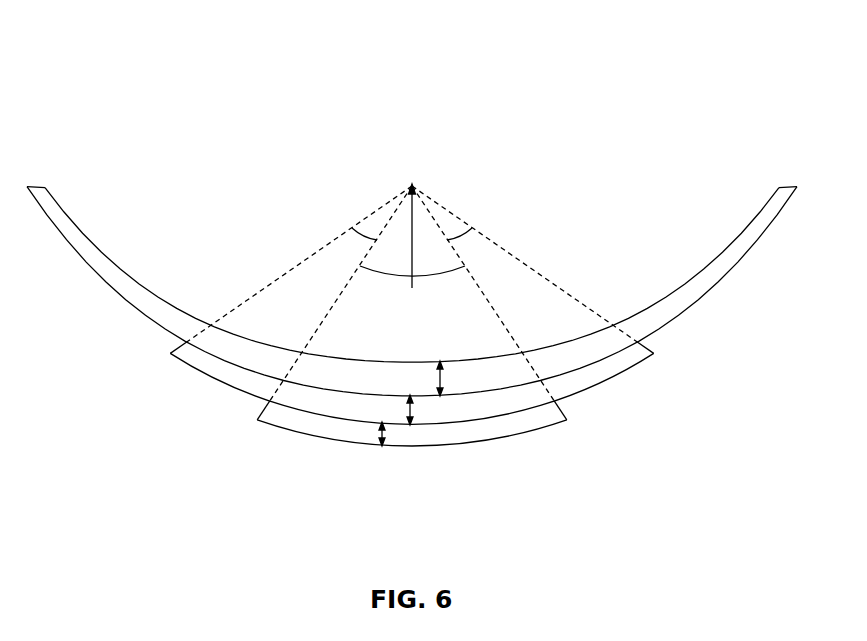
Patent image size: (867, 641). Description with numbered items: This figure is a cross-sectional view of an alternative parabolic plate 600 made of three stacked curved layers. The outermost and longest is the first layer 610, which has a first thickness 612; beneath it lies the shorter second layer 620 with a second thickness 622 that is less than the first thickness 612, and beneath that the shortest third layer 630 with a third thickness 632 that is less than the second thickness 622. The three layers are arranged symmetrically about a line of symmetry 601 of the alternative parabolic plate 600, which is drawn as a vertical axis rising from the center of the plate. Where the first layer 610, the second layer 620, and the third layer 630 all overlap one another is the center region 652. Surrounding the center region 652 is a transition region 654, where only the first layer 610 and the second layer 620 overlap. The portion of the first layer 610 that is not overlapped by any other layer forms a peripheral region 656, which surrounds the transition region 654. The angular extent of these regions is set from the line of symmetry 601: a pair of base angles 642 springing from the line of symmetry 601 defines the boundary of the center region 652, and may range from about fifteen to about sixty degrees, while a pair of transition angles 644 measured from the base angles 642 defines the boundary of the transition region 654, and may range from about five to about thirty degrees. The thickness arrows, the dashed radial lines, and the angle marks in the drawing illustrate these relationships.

The alternative parabolic plate 600 is at (722, 130).
The line of symmetry 601 is at (403, 213).
The first layer 610 is at (764, 233).
The first thickness 612 is at (440, 396).
The second layer 620 is at (624, 373).
The second thickness 622 is at (410, 425).
The third layer 630 is at (544, 428).
The third thickness 632 is at (382, 446).
The base angle 642 is at (386, 277).
The transition angle 644 is at (354, 234).
The center region 652 is at (342, 358).
The transition region 654 is at (284, 349).
The peripheral region 656 is at (125, 273).